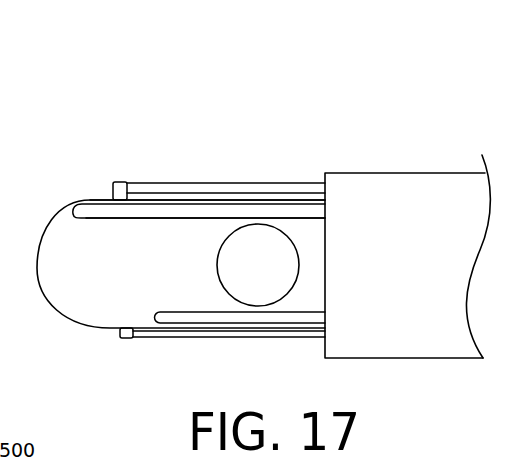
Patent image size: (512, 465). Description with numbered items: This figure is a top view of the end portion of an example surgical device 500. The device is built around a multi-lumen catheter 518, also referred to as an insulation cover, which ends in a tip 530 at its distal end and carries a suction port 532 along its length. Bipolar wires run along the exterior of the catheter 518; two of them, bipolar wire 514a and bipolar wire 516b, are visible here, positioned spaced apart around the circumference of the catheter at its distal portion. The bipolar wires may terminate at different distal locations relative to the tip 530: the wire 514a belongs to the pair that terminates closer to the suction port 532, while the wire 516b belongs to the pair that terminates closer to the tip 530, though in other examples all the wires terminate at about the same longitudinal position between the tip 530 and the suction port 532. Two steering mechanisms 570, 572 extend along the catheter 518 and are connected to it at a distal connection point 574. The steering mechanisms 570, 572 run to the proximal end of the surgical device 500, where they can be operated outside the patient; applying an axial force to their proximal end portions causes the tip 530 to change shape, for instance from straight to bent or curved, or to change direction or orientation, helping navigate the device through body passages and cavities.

The surgical device 500 is at (350, 128).
The multi-lumen catheter 518 is at (375, 173).
The tip 530 is at (37, 272).
The suction port 532 is at (227, 269).
The bipolar wire 514a is at (273, 317).
The bipolar wire 516b is at (247, 210).
The steering mechanism 570 is at (163, 339).
The steering mechanism 572 is at (180, 183).
The distal connection point 574 is at (120, 182).